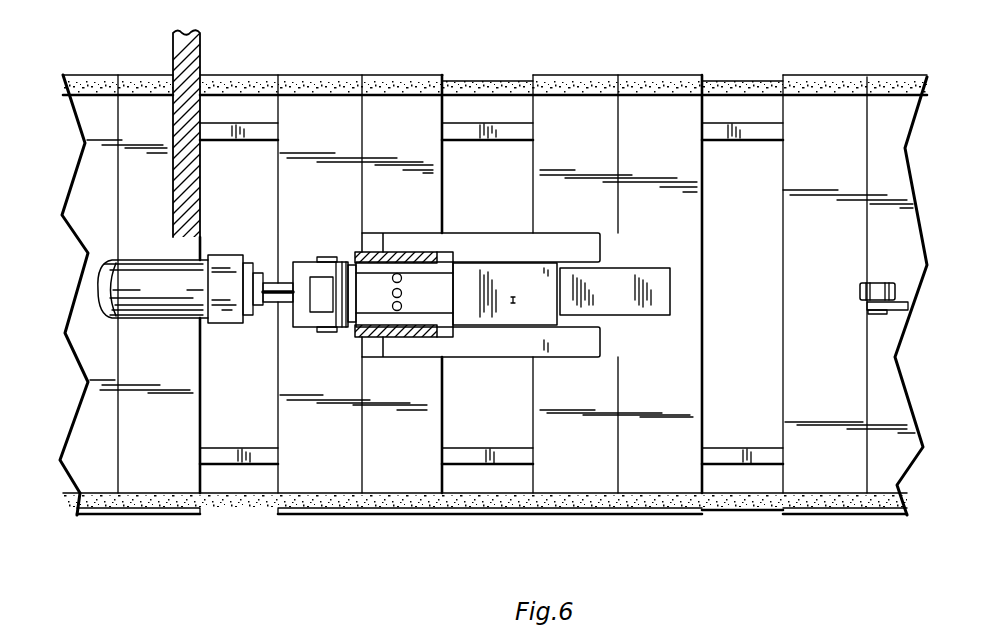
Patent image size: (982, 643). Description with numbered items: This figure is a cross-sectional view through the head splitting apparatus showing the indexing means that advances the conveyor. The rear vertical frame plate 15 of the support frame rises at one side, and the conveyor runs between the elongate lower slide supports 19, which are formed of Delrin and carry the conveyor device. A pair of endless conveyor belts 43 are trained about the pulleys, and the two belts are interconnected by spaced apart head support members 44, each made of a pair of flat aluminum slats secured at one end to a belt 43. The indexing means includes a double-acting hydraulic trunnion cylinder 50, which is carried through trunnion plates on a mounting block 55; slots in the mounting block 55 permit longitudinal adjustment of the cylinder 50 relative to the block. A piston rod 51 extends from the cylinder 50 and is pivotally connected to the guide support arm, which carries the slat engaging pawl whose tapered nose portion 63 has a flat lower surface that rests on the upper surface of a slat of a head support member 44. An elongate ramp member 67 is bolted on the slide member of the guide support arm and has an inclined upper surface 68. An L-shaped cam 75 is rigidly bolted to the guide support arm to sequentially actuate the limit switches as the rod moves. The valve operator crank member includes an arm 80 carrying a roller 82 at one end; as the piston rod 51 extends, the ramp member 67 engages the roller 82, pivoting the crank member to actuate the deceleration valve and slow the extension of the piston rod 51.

The rear vertical frame plate 15 is at (195, 185).
The lower slide support 19 is at (753, 133).
The endless conveyor belt 43 is at (755, 92).
The head support member 44 is at (786, 300).
The double-acting hydraulic trunnion cylinder 50 is at (160, 305).
The piston rod 51 is at (273, 305).
The mounting block 55 is at (438, 305).
The tapered nose portion 63 is at (560, 243).
The ramp member 67 is at (655, 269).
The inclined upper surface 68 is at (618, 287).
The L-shaped cam 75 is at (448, 245).
The arm 80 is at (900, 312).
The roller 82 is at (883, 283).